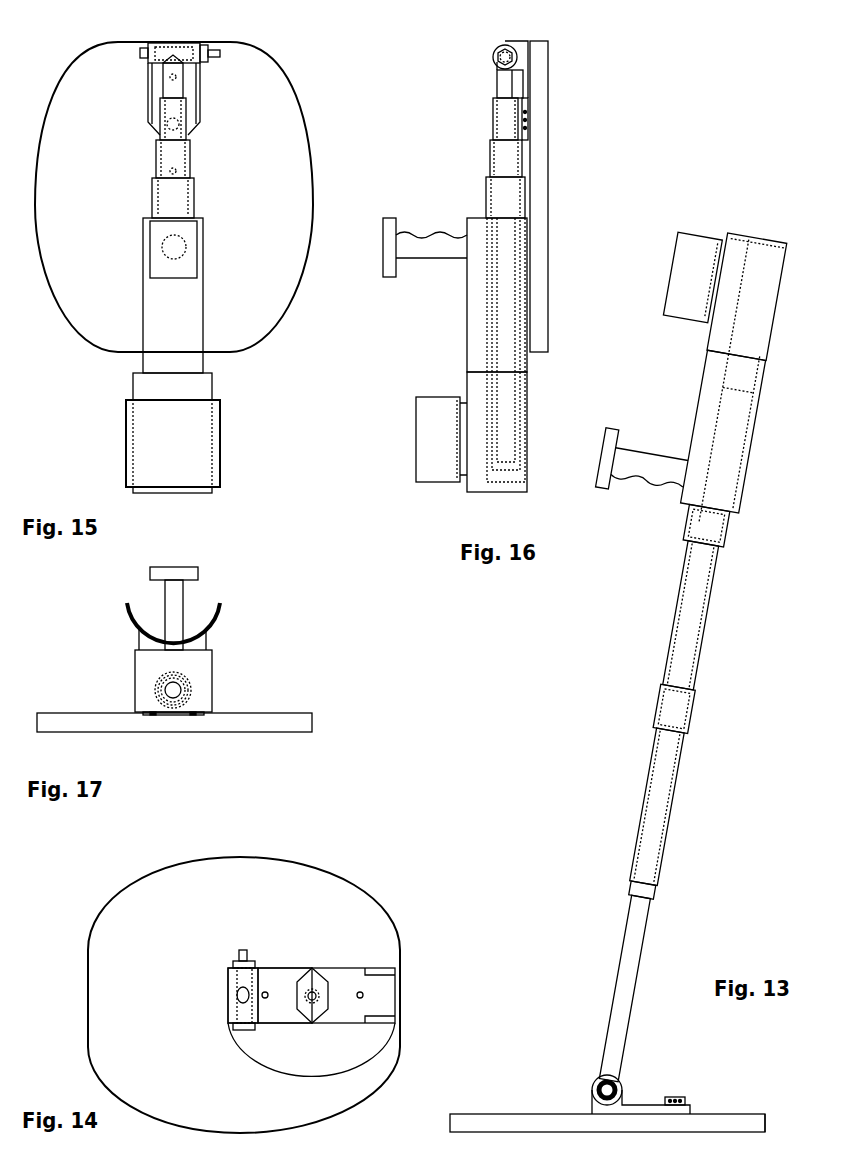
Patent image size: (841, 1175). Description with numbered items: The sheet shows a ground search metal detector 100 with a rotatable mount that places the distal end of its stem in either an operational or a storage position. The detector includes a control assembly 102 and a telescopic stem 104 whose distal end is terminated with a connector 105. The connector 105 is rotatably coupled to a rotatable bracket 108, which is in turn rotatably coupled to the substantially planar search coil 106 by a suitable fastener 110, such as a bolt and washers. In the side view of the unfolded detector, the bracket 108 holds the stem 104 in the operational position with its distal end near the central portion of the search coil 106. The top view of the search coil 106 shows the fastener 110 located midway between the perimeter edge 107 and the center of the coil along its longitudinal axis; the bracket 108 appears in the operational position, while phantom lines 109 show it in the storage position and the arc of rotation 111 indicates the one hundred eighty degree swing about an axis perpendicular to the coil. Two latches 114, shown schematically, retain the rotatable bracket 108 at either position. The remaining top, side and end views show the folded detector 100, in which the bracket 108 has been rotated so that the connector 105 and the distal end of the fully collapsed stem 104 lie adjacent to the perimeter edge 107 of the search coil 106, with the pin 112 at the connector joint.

In FIG. 15, the ground search metal detector 100 is at (45, 375).
In FIG. 16, the ground search metal detector 100 is at (423, 343).
In FIG. 13, the ground search metal detector 100 is at (767, 810).
In FIG. 17, the ground search metal detector 100 is at (79, 643).
In FIG. 15, the control assembly 102 is at (221, 385).
In FIG. 16, the control assembly 102 is at (478, 493).
In FIG. 13, the control assembly 102 is at (746, 235).
In FIG. 17, the control assembly 102 is at (213, 668).
In FIG. 15, the stem 104 is at (191, 170).
In FIG. 16, the stem 104 is at (493, 118).
In FIG. 13, the stem 104 is at (722, 392).
In FIG. 17, the stem 104 is at (155, 688).
In FIG. 14, the stem 104 is at (237, 1000).
In FIG. 15, the connector 105 is at (167, 43).
In FIG. 16, the connector 105 is at (497, 74).
In FIG. 13, the connector 105 is at (594, 1084).
In FIG. 14, the connector 105 is at (237, 992).
In FIG. 15, the search coil 106 is at (50, 292).
In FIG. 16, the search coil 106 is at (549, 258).
In FIG. 13, the search coil 106 is at (516, 1114).
In FIG. 17, the search coil 106 is at (273, 713).
In FIG. 14, the search coil 106 is at (88, 975).
In FIG. 15, the perimeter edge 107 is at (207, 42).
In FIG. 16, the perimeter edge 107 is at (548, 41).
In FIG. 13, the perimeter edge 107 is at (760, 1114).
In FIG. 14, the perimeter edge 107 is at (400, 993).
In FIG. 15, the rotatable bracket 108 is at (201, 99).
In FIG. 16, the rotatable bracket 108 is at (523, 41).
In FIG. 13, the rotatable bracket 108 is at (624, 1096).
In FIG. 14, the rotatable bracket 108 is at (299, 968).
In FIG. 14, the phantom lines 109 is at (377, 1023).
In FIG. 15, the fastener 110 is at (180, 127).
In FIG. 16, the fastener 110 is at (524, 110).
In FIG. 13, the fastener 110 is at (680, 1097).
In FIG. 14, the fastener 110 is at (314, 990).
In FIG. 14, the arc of rotation 111 is at (310, 1083).
In FIG. 15, the pivot pin 112 is at (140, 57).
In FIG. 16, the pivot pin 112 is at (493, 50).
In FIG. 14, the pivot pin 112 is at (240, 962).
In FIG. 15, the latches 114 is at (169, 170).
In FIG. 14, the latches 114 is at (358, 998).